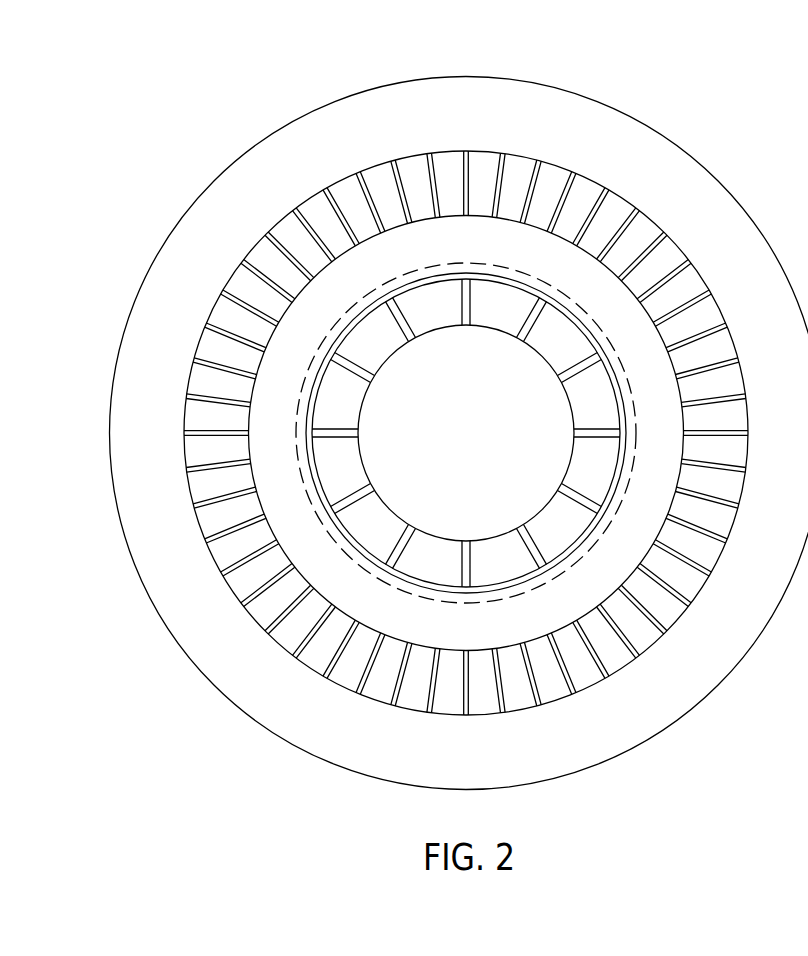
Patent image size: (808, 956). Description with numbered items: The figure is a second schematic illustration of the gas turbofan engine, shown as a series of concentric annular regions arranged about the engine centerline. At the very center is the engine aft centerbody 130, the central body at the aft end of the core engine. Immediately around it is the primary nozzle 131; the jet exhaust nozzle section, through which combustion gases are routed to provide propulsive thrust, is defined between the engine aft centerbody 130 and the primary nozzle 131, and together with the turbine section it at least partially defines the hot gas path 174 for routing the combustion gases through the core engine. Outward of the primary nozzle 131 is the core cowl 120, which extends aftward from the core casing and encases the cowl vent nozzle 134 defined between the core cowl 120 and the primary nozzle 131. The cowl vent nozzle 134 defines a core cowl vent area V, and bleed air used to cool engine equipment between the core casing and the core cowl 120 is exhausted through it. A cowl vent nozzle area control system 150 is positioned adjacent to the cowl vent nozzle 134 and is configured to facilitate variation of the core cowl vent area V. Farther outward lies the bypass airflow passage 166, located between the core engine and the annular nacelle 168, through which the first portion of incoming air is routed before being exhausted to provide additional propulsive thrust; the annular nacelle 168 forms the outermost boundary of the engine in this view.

The annular nacelle 168 is at (673, 170).
The bypass airflow passage 166 is at (690, 283).
The cowl vent nozzle area control system 150 is at (497, 263).
The core cowl 120 is at (514, 443).
The hot gas path 174 is at (558, 330).
The primary nozzle 131 is at (615, 393).
The cowl vent nozzle 134 is at (593, 534).
The engine aft centerbody 130 is at (484, 445).
The core cowl vent area V is at (634, 460).